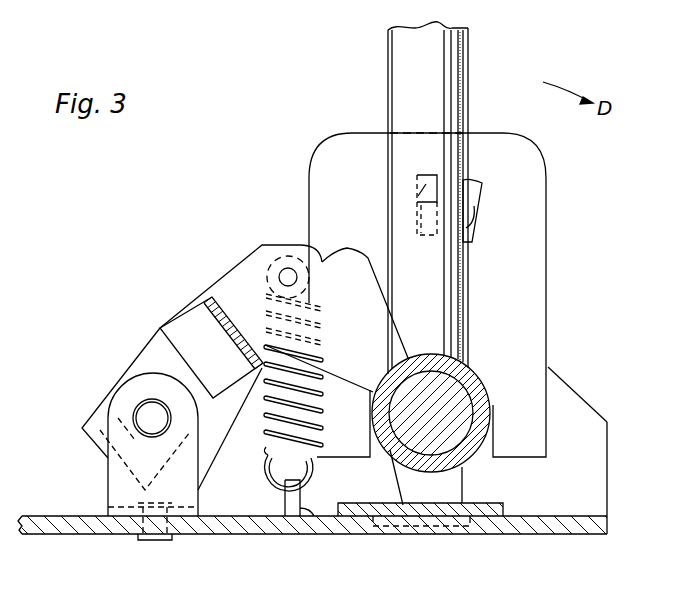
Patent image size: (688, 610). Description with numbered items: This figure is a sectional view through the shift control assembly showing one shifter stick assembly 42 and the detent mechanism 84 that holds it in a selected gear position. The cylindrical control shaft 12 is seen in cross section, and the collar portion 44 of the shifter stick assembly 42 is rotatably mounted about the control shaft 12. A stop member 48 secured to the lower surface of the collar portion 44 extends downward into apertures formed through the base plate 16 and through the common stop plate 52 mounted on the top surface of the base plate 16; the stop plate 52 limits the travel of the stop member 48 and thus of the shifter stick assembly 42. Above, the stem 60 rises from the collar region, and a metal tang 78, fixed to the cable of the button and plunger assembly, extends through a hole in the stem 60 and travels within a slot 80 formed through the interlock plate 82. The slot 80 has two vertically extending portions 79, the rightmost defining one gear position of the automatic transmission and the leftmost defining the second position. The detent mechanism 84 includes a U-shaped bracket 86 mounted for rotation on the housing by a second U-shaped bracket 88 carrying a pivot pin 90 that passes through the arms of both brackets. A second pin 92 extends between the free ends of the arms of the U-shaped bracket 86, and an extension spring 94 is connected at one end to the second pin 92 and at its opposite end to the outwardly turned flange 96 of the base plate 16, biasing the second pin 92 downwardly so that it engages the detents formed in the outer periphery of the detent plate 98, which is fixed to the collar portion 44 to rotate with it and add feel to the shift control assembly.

The control shaft 12 is at (458, 390).
The base plate 16 is at (598, 525).
The shifter stick assembly 42 is at (388, 63).
The collar portion 44 is at (478, 387).
The stop member 48 is at (453, 490).
The stop plate 52 is at (513, 513).
The stem 60 is at (470, 63).
The metal tang 78 is at (418, 192).
The vertically extending portion 79 is at (400, 187).
The slot 80 is at (473, 222).
The interlock plate 82 is at (548, 218).
The detent mechanism 84 is at (87, 347).
The U-shaped bracket 86 is at (243, 265).
The second U-shaped bracket 88 is at (98, 418).
The pivot pin 90 is at (150, 400).
The second pin 92 is at (288, 266).
The extension spring 94 is at (263, 447).
The anchor 96 is at (304, 516).
The detent plate 98 is at (372, 262).